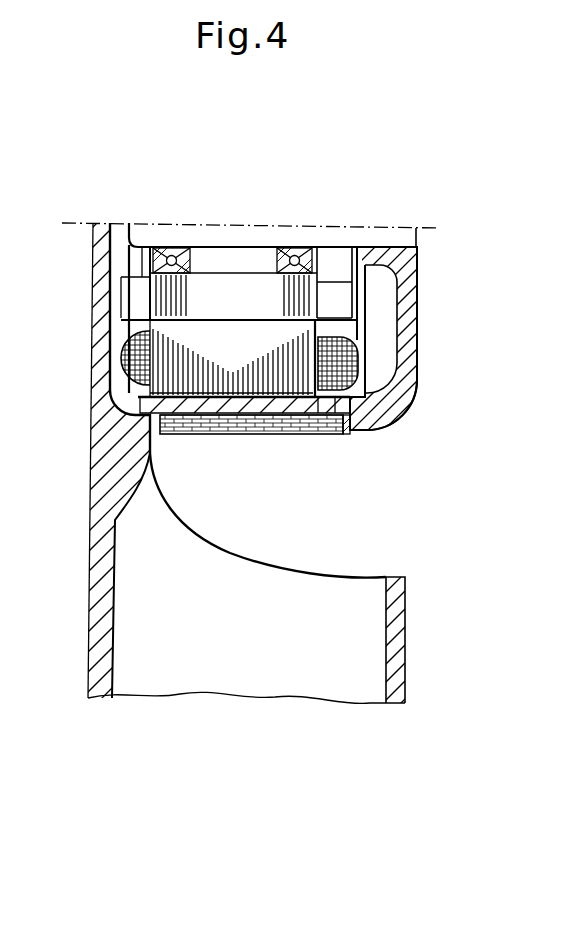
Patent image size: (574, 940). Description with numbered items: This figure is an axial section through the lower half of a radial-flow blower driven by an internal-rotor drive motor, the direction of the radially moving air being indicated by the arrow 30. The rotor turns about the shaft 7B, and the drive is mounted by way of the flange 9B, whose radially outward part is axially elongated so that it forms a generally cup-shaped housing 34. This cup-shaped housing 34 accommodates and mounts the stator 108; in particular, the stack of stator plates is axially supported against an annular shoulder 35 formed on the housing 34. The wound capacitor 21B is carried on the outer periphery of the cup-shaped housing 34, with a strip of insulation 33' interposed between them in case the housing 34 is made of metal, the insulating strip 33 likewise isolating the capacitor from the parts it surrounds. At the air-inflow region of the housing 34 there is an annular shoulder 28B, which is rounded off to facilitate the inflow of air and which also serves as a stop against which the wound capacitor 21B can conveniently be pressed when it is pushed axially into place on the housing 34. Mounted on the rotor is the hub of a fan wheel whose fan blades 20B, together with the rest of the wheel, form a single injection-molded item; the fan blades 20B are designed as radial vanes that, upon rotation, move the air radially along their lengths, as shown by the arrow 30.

The shaft 7B is at (400, 240).
The flange 9B is at (406, 302).
The wound capacitor 21B is at (410, 402).
The annular shoulder 28B is at (358, 428).
The stator 108 is at (165, 360).
The cup-shaped housing 34 is at (213, 405).
The insulating strip 33 is at (271, 459).
The strip of insulation 33' is at (251, 446).
The annular shoulder 35 is at (323, 400).
The arrow 30 is at (365, 561).
The fan blades 20B is at (269, 681).